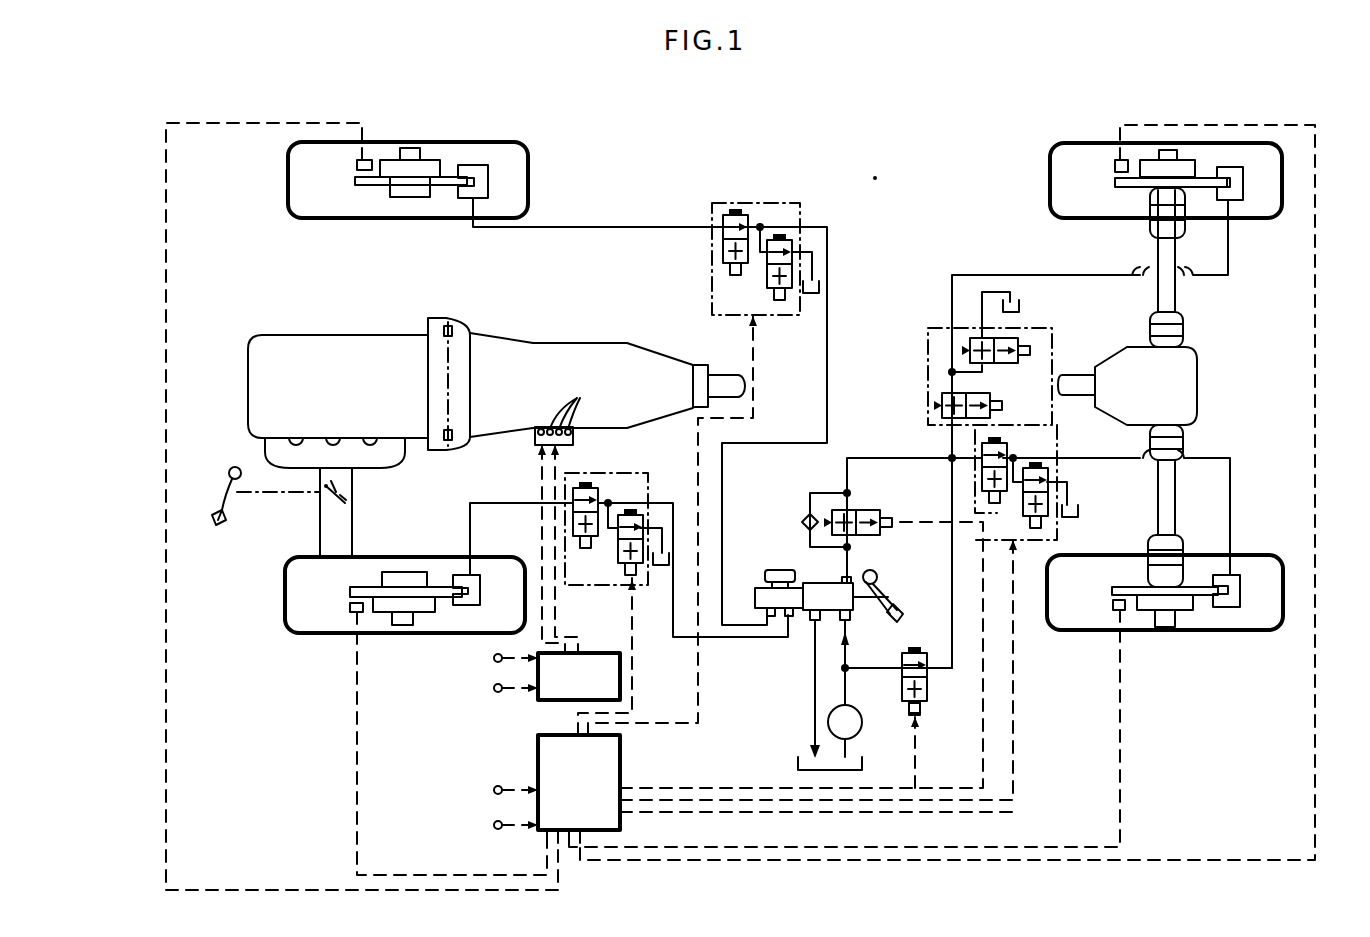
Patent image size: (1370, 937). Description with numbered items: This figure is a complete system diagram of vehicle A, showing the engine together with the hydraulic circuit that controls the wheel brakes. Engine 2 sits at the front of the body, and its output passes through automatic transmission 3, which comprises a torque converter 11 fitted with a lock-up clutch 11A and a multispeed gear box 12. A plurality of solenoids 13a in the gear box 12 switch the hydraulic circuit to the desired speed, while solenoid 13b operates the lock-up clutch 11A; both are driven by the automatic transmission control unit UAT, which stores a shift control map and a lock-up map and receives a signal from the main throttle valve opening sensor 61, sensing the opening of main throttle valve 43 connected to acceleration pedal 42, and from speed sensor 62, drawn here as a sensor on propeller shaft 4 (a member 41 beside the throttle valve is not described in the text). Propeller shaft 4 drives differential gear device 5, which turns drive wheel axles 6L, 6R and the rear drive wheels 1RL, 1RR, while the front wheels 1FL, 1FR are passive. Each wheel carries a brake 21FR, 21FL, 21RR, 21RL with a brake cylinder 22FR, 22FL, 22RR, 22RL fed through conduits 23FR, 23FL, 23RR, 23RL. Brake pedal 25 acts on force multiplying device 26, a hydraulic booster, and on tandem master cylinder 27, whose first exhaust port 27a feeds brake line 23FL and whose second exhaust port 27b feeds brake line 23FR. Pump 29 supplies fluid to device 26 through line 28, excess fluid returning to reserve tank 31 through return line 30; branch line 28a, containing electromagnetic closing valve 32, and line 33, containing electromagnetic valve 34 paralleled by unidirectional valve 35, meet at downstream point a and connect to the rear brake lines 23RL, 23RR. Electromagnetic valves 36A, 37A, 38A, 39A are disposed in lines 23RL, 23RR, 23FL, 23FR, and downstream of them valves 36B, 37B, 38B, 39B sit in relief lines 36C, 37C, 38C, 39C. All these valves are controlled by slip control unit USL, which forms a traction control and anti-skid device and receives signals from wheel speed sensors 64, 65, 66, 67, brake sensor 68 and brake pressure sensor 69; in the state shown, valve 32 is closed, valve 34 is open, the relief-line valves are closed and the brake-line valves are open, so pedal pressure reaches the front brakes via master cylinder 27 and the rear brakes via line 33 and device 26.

The right front passive wheel 1FR is at (292, 188).
The left front passive wheel 1FL is at (292, 598).
The right rear drive wheel 1RR is at (1058, 178).
The left rear drive wheel 1RL is at (1068, 630).
The engine 2 is at (318, 335).
The automatic transmission 3 is at (717, 355).
The propeller shaft 4 is at (722, 388).
The differential gear device 5 is at (1180, 388).
The right drive wheel axle 6R is at (1182, 310).
The left drive wheel axle 6L is at (1176, 478).
The torque converter 11 is at (413, 365).
The lock-up clutch 11A is at (447, 393).
The multispeed gear box 12 is at (598, 343).
The solenoids 13a is at (582, 398).
The solenoid 13b is at (540, 426).
The right front wheel brake 21FR is at (444, 162).
The left front wheel brake 21FL is at (438, 608).
The right rear wheel brake 21RR is at (1200, 160).
The left rear wheel brake 21RL is at (1200, 625).
The brake cylinder 22FR is at (490, 184).
The brake cylinder 22FL is at (472, 608).
The brake cylinder 22RR is at (1243, 190).
The brake cylinder 22RL is at (1243, 600).
The brake line 23FR is at (673, 226).
The brake line 23FL is at (468, 528).
The brake line 23RR is at (1100, 275).
The brake line 23RL is at (1235, 490).
The brake pedal 25 is at (893, 588).
The force multiplying device 26 is at (812, 583).
The tandem-type master cylinder 27 is at (758, 588).
The first exhaust port 27a is at (790, 618).
The second exhaust port 27b is at (772, 617).
The line 28 is at (848, 670).
The branch line 28a is at (930, 690).
The pump 29 is at (862, 735).
The return line 30 is at (812, 723).
The reserve tank 31 is at (797, 763).
The electromagnetic closing valve 32 is at (905, 652).
The line 33 is at (870, 458).
The electromagnetic valve 34 is at (862, 510).
The unidirectional valve 35 is at (808, 514).
The electromagnetic valve 36A is at (1006, 452).
The electromagnetic valve 36B is at (1050, 484).
The relief line 36C is at (1078, 516).
The electromagnetic valve 37A is at (942, 398).
The electromagnetic valve 37B is at (968, 345).
The relief line 37C is at (1005, 298).
The electromagnetic valve 38A is at (572, 490).
The electromagnetic valve 38B is at (622, 570).
The relief line 38C is at (618, 500).
The electromagnetic valve 39A is at (745, 213).
The electromagnetic valve 39B is at (794, 252).
The relief line 39C is at (775, 230).
The shift lever 41 is at (318, 526).
The acceleration pedal 42 is at (218, 528).
The main throttle valve 43 is at (350, 492).
The main throttle valve opening sensor 61 is at (494, 659).
The speed sensor 62 is at (498, 693).
The wheel speed sensor 64 is at (378, 158).
The wheel speed sensor 65 is at (352, 612).
The wheel speed sensor 66 is at (1110, 158).
The wheel speed sensor 67 is at (1122, 615).
The brake sensor 68 is at (494, 790).
The brake pressure sensor 69 is at (495, 829).
The downstream point a is at (948, 456).
The vehicle A is at (875, 176).
The automatic transmission control unit UAT is at (579, 676).
The slip control unit USL is at (579, 782).